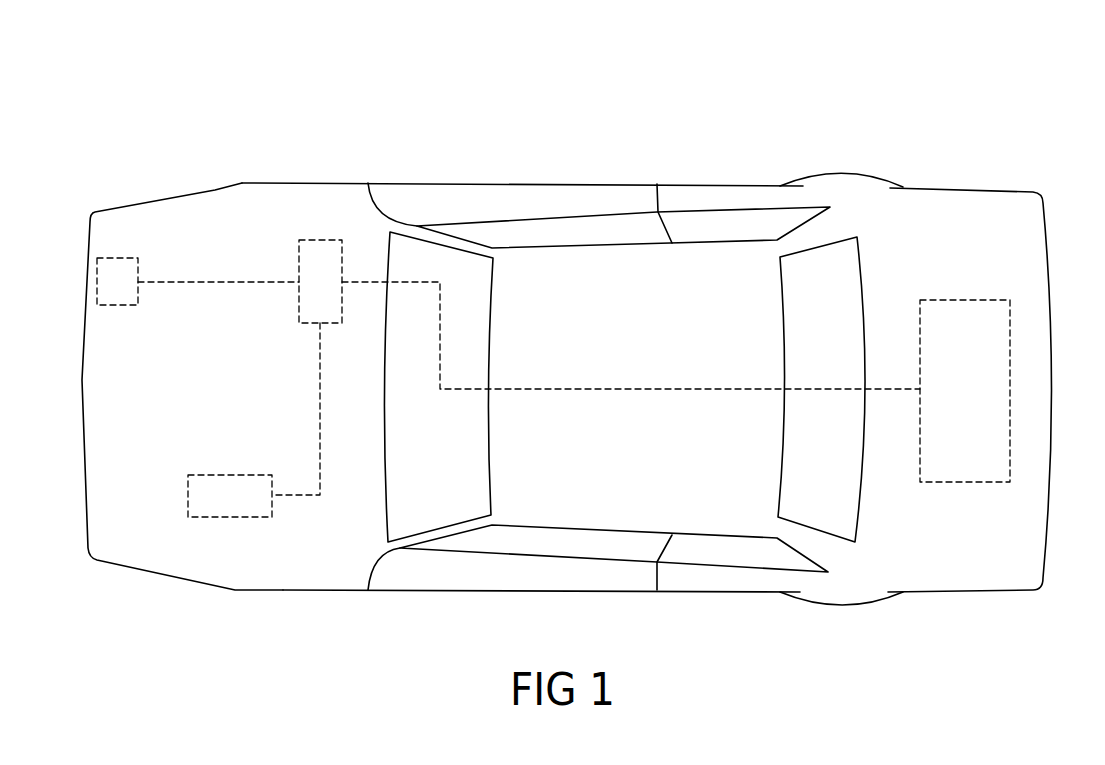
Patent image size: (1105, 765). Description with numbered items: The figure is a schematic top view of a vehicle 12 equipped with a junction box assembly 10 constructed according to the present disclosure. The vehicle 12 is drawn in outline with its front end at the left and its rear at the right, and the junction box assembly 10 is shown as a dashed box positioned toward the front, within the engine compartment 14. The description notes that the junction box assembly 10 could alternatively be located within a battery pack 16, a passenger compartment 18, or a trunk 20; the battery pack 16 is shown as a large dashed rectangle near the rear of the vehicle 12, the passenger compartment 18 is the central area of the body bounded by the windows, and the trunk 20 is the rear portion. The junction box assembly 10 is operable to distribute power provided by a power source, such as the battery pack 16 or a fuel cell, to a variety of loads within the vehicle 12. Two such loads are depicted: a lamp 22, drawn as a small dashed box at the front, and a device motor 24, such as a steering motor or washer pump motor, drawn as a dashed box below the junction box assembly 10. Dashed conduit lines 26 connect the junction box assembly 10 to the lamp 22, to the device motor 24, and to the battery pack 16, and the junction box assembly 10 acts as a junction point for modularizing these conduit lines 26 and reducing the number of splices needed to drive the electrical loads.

The junction box assembly 10 is at (320, 240).
The vehicle 12 is at (571, 318).
The engine compartment 14 is at (162, 547).
The battery pack 16 is at (965, 482).
The passenger compartment 18 is at (608, 228).
The trunk 20 is at (980, 210).
The lamp 22 is at (117, 258).
The device motor 24 is at (233, 517).
The conduit lines 26 is at (227, 282).